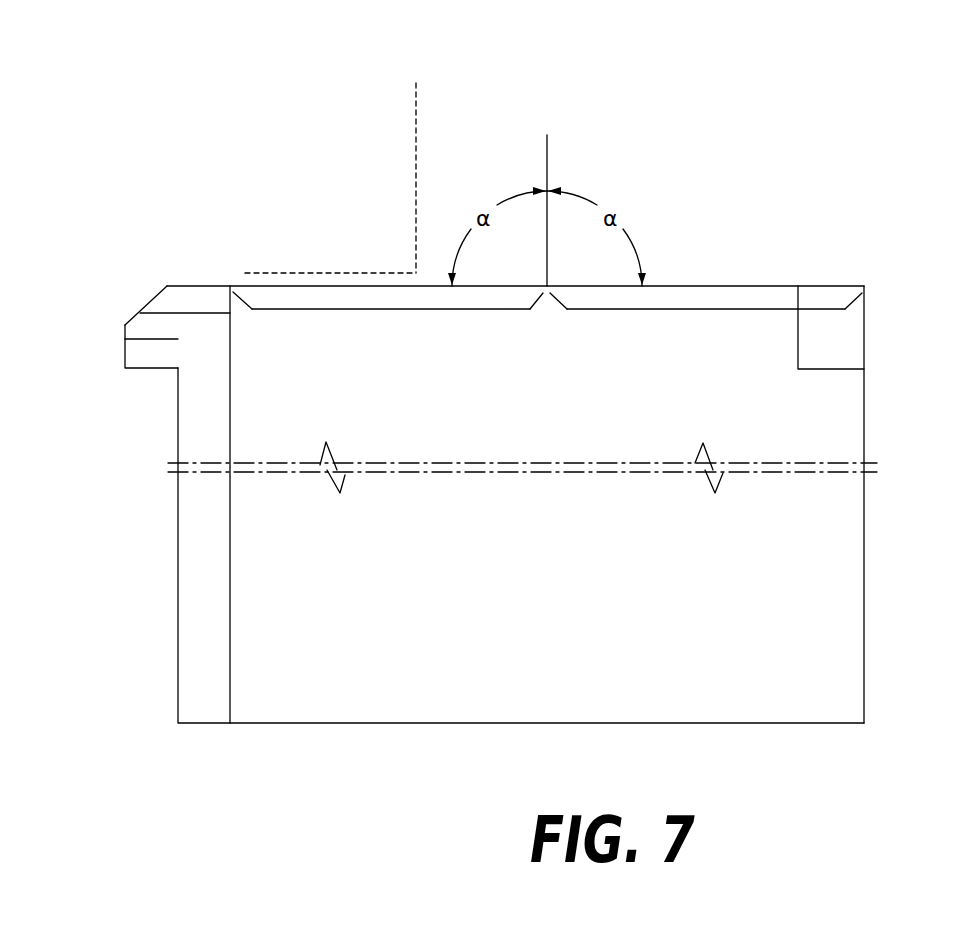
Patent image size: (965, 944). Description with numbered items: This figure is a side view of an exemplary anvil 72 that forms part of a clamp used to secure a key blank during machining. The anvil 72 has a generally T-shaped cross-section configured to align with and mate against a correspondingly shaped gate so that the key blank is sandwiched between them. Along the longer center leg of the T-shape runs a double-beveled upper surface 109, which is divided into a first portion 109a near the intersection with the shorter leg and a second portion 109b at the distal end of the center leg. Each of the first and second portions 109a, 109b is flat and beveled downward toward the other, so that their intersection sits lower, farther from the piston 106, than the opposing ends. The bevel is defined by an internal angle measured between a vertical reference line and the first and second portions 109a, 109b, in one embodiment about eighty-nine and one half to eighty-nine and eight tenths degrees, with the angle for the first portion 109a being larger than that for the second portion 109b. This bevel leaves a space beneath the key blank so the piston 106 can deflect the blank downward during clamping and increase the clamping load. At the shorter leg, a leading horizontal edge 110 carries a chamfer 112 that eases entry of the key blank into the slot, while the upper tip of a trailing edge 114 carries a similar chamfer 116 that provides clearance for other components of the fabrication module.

The anvil 72 is at (781, 98).
The piston 106 is at (416, 105).
The double-beveled upper surface 109 is at (405, 286).
The first portion 109a is at (360, 309).
The second portion 109b is at (708, 309).
The leading horizontal edge 110 is at (125, 352).
The chamfer 112 is at (140, 313).
The trailing edge 114 is at (864, 392).
The chamfer 116 is at (843, 340).